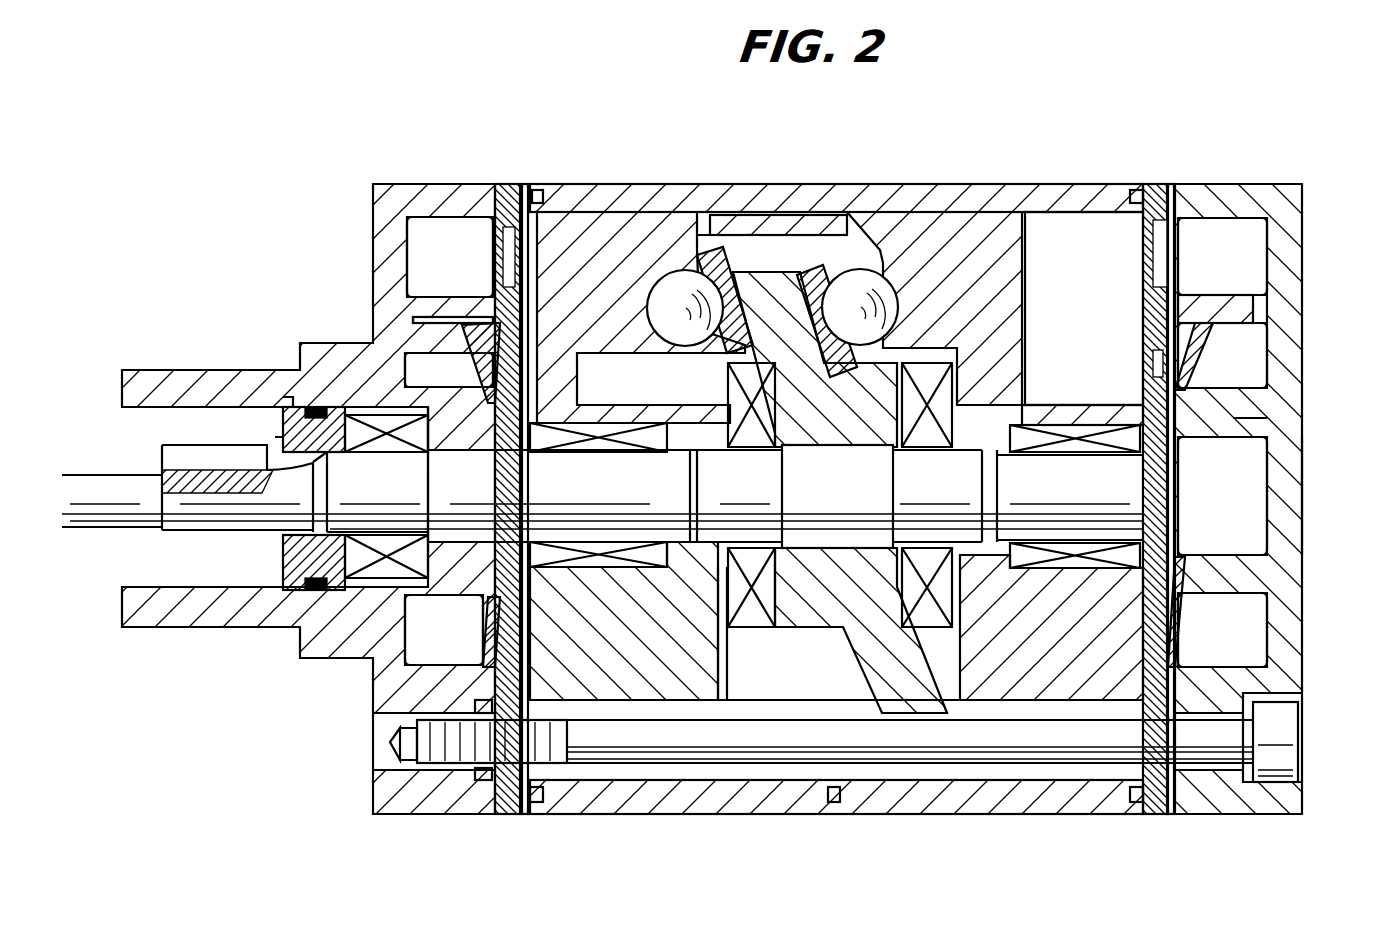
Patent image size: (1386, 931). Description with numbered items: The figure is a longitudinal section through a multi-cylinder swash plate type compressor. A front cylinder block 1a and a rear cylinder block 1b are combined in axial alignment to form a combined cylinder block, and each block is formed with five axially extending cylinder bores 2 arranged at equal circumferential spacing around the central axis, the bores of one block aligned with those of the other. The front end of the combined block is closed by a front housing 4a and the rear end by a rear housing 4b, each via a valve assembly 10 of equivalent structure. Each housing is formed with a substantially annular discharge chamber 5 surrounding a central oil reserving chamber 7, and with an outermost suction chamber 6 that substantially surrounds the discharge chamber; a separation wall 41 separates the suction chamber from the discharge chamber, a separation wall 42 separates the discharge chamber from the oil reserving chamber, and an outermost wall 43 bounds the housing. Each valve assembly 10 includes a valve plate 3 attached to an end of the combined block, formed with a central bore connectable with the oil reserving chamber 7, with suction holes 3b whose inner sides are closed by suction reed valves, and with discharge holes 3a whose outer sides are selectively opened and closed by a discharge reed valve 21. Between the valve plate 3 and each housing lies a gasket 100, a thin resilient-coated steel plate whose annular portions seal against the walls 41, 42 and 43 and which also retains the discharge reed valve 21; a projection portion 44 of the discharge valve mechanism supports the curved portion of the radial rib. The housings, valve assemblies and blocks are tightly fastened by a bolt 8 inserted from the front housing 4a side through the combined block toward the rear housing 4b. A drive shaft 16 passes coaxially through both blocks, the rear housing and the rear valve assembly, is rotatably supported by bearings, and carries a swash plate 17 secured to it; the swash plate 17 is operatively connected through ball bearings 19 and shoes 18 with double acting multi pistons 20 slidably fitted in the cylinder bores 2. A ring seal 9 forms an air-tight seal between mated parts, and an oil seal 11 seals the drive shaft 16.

The front cylinder block 1a is at (1050, 184).
The rear cylinder block 1b is at (598, 184).
The cylinder bores 2 is at (1093, 220).
The valve plate 3 is at (510, 184).
The discharge hole 3a is at (1153, 350).
The suction hole 3b is at (1157, 268).
The front housing 4a is at (1304, 205).
The rear housing 4b is at (377, 184).
The discharge chamber 5 is at (425, 333).
The suction chamber 6 is at (423, 227).
The oil reserving chamber 7 is at (413, 368).
The bolt 8 is at (743, 762).
The ring seal 9 is at (535, 805).
The valve assembly 10 is at (527, 176).
The oil seal 11 is at (285, 560).
The drive shaft 16 is at (555, 500).
The swash plate 17 is at (852, 430).
The shoes 18 is at (850, 240).
The ball bearings 19 is at (680, 280).
The double acting multi pistons 20 is at (963, 184).
The discharge reed valve 21 is at (428, 362).
The separation wall 41 is at (1255, 315).
The separation wall 42 is at (1302, 450).
The outermost wall 43 is at (1245, 200).
The projection portion 44 is at (425, 335).
The gasket 100 is at (524, 200).